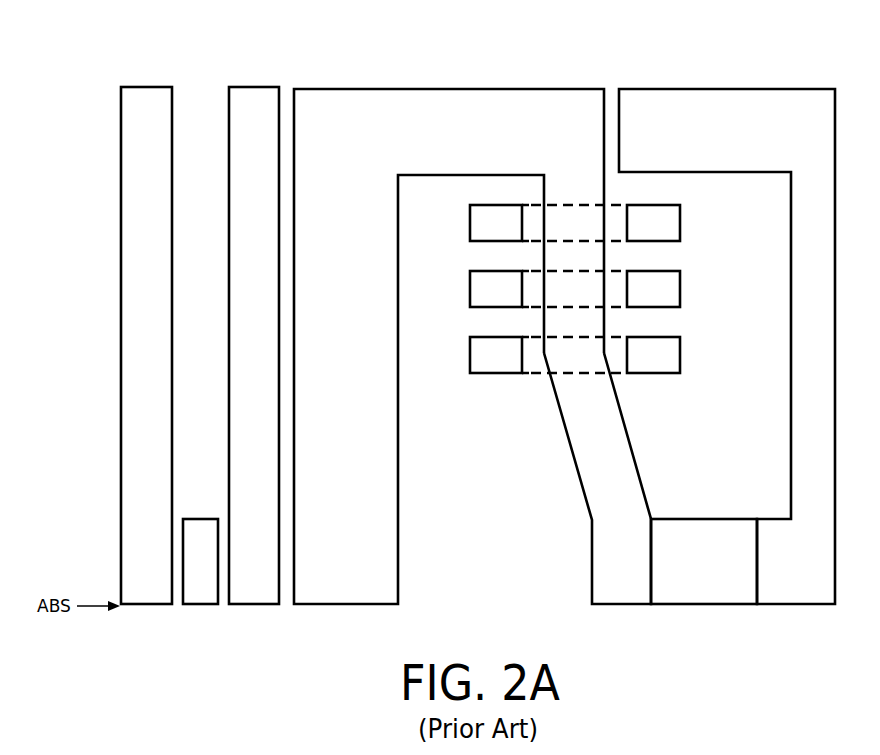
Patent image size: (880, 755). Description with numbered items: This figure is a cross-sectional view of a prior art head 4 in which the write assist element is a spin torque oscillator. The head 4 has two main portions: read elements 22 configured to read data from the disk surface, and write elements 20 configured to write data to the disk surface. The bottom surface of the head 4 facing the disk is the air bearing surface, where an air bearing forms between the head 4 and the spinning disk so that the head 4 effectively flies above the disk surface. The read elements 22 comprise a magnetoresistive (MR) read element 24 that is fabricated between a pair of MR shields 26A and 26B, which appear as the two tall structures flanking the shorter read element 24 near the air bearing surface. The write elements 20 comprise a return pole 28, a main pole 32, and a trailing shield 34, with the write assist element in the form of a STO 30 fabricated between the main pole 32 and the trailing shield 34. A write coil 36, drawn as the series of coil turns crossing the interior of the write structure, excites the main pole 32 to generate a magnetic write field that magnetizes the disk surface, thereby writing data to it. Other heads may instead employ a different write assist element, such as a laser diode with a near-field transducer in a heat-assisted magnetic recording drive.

The head 4 is at (84, 50).
The write elements 20 is at (292, 75).
The read elements 22 is at (283, 75).
The magnetoresistive (MR) read element 24 is at (202, 604).
The MR shield 26A is at (145, 604).
The MR shield 26B is at (255, 604).
The return pole 28 is at (348, 604).
The STO 30 is at (704, 604).
The main pole 32 is at (620, 604).
The trailing shield 34 is at (797, 604).
The write coil 36 is at (497, 373).